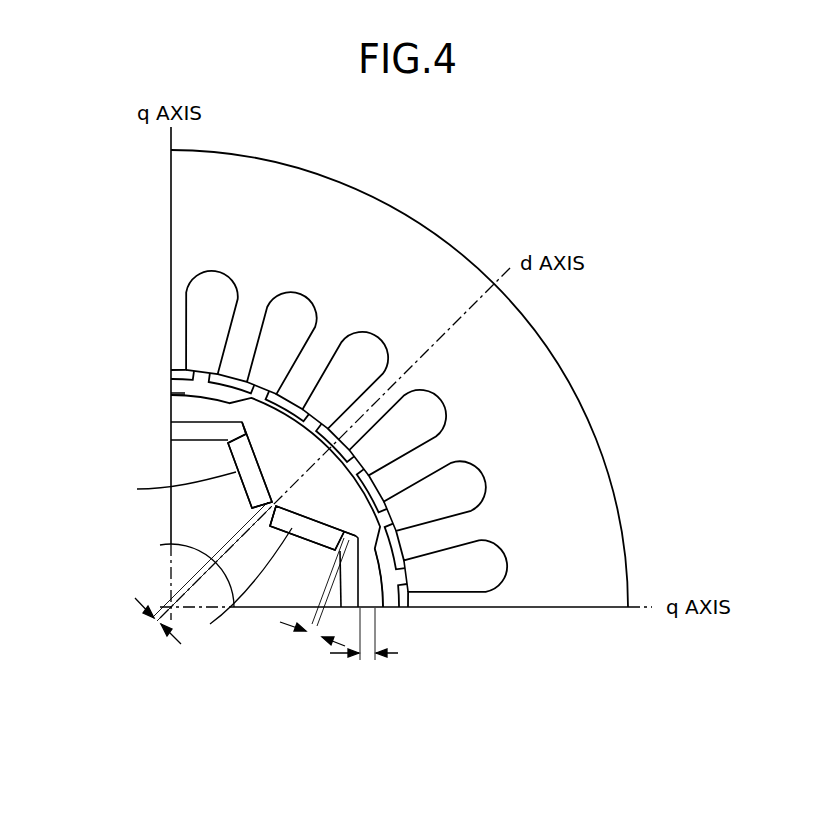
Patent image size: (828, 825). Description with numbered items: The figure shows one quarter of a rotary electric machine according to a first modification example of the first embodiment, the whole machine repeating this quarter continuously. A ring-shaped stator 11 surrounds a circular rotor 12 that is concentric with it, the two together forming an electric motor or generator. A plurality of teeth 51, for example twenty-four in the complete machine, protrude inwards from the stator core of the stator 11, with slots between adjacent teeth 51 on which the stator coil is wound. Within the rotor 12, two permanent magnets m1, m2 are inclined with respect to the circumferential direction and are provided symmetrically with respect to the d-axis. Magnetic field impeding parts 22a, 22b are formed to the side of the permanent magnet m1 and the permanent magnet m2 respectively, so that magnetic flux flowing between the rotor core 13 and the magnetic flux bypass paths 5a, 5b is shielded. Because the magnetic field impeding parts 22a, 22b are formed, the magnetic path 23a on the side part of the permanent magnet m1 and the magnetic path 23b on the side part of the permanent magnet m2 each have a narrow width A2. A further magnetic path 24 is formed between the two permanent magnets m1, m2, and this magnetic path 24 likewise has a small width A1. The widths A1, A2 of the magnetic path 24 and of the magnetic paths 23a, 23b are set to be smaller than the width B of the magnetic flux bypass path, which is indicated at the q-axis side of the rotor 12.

The stator 11 is at (400, 378).
The rotor 12 is at (209, 494).
The rotor core 13 is at (230, 456).
The magnetic path 24 is at (245, 502).
The teeth 51 is at (186, 325).
The magnetic flux bypass path 5a is at (183, 410).
The magnetic flux bypass path 5b is at (382, 608).
The magnetic field impeding part 22a is at (190, 428).
The magnetic field impeding part 22b is at (350, 608).
The magnetic path 23a is at (230, 460).
The magnetic path 23b is at (312, 541).
The permanent magnet m1 is at (168, 489).
The permanent magnet m2 is at (242, 590).
The width of magnetic path 24 A1 is at (197, 580).
The width of magnetic paths 23a and 23b A2 is at (314, 605).
The width of magnetic flux bypass path B is at (364, 650).